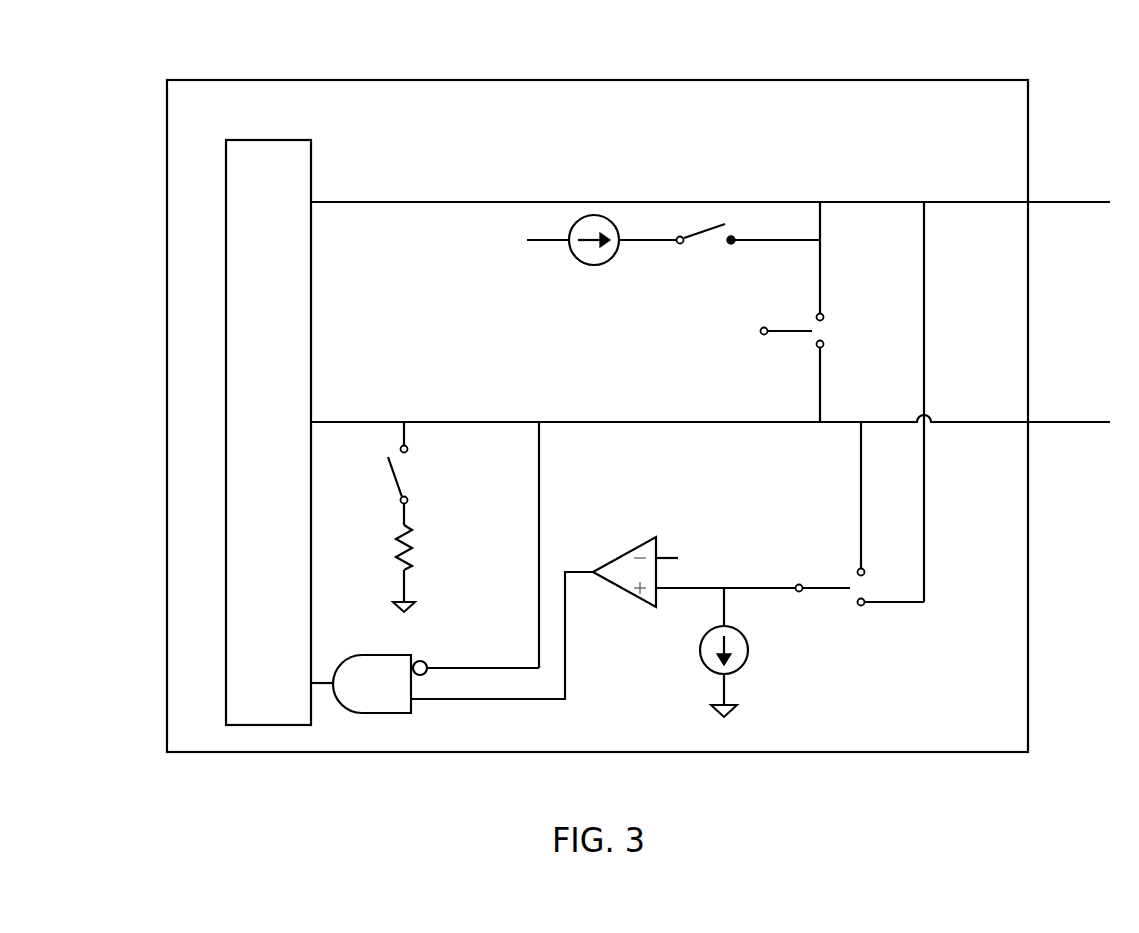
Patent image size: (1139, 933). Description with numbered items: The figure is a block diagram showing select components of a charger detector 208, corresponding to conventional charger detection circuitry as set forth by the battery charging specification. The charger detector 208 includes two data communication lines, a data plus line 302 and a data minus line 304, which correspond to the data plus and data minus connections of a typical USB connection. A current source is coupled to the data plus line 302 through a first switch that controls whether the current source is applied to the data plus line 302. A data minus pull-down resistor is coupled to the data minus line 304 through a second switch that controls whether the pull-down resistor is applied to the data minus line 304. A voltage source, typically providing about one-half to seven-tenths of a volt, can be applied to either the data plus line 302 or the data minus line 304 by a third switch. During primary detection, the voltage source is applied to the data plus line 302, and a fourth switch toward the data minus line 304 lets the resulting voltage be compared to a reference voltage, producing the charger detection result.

The charger detector 208 is at (258, 79).
The data plus line 302 is at (952, 200).
The data minus line 304 is at (957, 420).